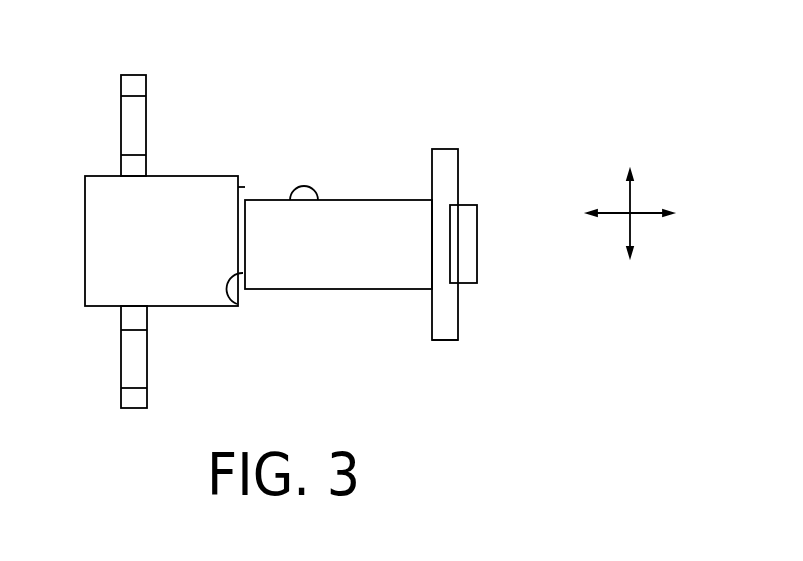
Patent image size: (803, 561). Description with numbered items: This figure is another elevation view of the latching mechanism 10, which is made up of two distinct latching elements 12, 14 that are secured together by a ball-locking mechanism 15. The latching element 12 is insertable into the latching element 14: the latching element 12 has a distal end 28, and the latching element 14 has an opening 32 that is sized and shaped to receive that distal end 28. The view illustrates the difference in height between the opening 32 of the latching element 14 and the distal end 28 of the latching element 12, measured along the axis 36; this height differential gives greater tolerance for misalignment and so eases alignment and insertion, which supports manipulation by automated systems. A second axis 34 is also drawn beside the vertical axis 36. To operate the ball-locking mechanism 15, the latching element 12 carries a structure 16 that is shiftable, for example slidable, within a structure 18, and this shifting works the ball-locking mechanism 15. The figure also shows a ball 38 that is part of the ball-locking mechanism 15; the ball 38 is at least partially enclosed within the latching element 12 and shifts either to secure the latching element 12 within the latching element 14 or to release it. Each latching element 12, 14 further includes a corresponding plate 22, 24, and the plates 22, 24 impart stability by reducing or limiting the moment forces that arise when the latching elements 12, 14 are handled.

The latching mechanism 10 is at (422, 90).
The latching element 12 is at (336, 284).
The latching element 14 is at (186, 176).
The ball-locking mechanism 15 is at (450, 226).
The structure 16 is at (477, 218).
The structure 18 is at (458, 165).
The plate 22 is at (121, 380).
The plate 24 is at (458, 328).
The distal end 28 is at (237, 304).
The opening 32 is at (240, 187).
The horizontal axis 34 is at (647, 210).
The axis 36 is at (627, 194).
The ball 38 is at (307, 187).